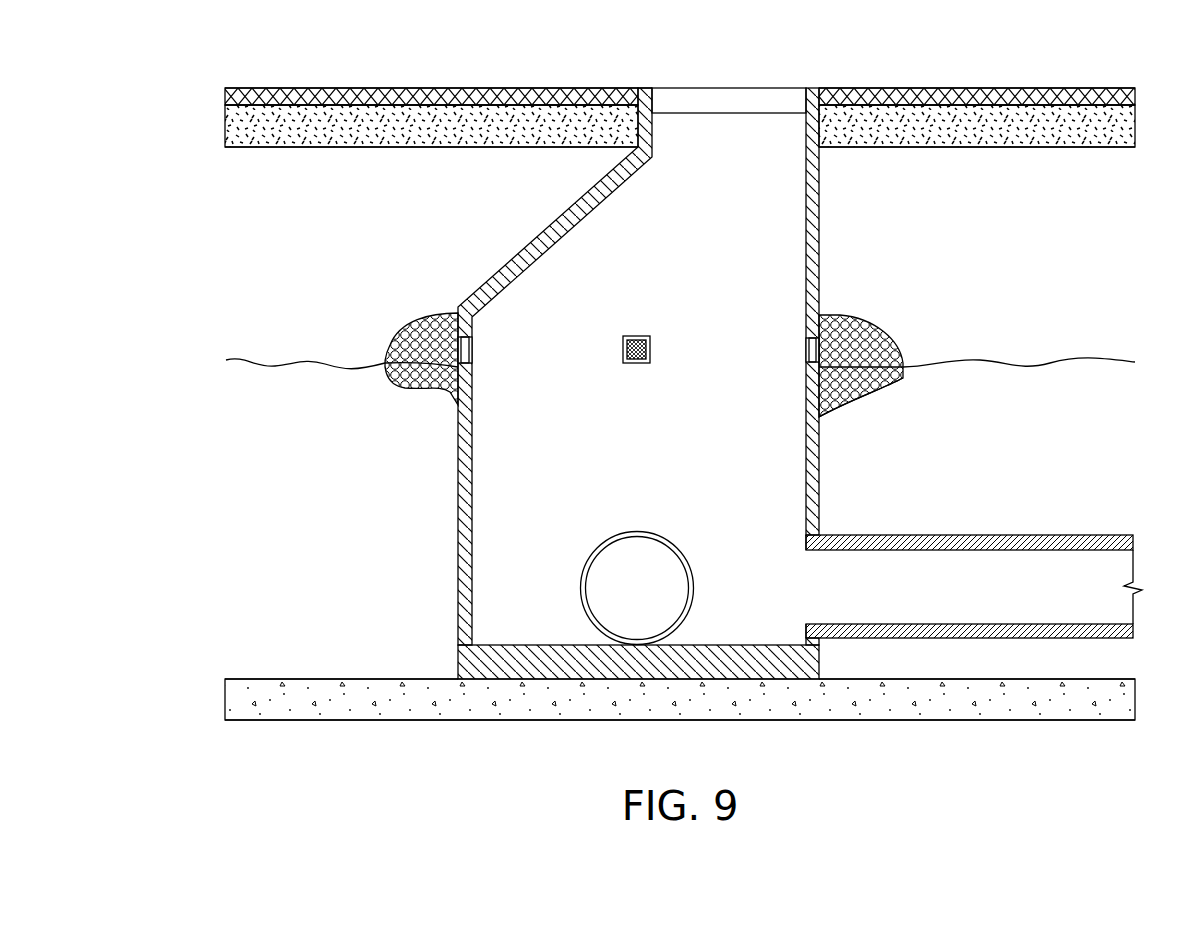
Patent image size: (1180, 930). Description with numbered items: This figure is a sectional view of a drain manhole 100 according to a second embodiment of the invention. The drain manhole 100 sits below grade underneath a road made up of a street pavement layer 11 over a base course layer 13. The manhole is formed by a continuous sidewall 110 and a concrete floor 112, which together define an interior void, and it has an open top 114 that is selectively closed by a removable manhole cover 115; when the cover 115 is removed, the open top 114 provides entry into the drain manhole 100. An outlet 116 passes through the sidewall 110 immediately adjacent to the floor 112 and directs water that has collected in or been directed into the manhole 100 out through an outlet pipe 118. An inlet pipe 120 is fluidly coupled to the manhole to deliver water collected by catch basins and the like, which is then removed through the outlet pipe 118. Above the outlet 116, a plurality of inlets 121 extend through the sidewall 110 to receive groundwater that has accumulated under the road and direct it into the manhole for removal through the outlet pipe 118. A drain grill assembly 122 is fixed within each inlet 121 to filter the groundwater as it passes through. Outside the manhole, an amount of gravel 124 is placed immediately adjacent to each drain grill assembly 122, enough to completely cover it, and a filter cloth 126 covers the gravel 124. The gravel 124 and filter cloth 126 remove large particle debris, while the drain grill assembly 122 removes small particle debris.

The street pavement layer 11 is at (966, 88).
The base course layer 13 is at (1066, 120).
The drain manhole 100 is at (662, 351).
The continuous sidewall 110 is at (820, 203).
The concrete floor 112 is at (820, 660).
The open top 114 is at (655, 100).
The cover 115 is at (775, 88).
The outlet 116 is at (800, 546).
The outlet pipe 118 is at (1007, 640).
The inlet pipe 120 is at (637, 531).
The inlet 121 is at (638, 326).
The drain grill assembly 122 is at (468, 355).
The gravel 124 is at (872, 343).
The filter cloth 126 is at (845, 395).